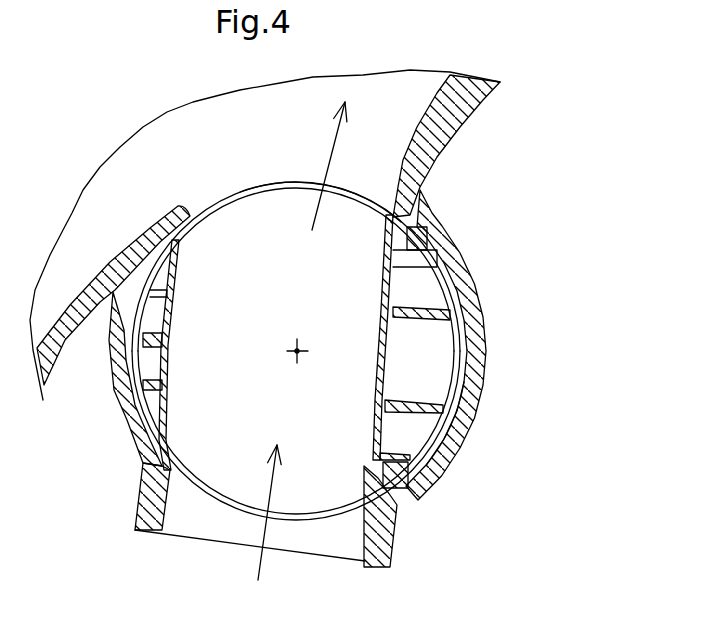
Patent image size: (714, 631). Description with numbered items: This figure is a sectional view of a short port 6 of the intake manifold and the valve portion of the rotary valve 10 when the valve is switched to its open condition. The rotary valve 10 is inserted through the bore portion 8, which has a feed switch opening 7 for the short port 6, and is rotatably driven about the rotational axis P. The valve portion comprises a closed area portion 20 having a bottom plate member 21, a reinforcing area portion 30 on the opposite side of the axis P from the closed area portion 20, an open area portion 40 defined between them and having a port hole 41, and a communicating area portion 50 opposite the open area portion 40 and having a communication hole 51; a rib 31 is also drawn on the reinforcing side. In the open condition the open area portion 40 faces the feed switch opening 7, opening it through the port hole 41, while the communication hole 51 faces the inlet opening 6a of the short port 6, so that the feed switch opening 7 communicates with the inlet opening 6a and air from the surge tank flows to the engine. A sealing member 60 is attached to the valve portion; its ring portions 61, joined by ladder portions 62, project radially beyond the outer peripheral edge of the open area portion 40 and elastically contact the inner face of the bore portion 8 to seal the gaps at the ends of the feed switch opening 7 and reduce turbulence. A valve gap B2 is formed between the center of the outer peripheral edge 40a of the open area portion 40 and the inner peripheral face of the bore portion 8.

The short port 6 is at (383, 173).
The inlet opening 6a is at (187, 537).
The feed switch opening 7 is at (193, 213).
The bore portion 8 is at (484, 345).
The rotary valve 10 is at (450, 417).
The closed area portion 20 is at (457, 353).
The bottom plate member 21 is at (387, 303).
The reinforcing area portion 30 is at (143, 365).
The rib 31 is at (178, 323).
The open area portion 40 is at (296, 238).
The port hole 41 is at (237, 213).
The outer peripheral edge 40a is at (355, 193).
The communicating area portion 50 is at (296, 480).
The communication hole 51 is at (312, 508).
The sealing member 60 is at (232, 513).
The ring portion 61 is at (205, 487).
The ladder portion 62 is at (410, 247).
The rotational axis P is at (297, 352).
The valve gap B2 is at (298, 217).